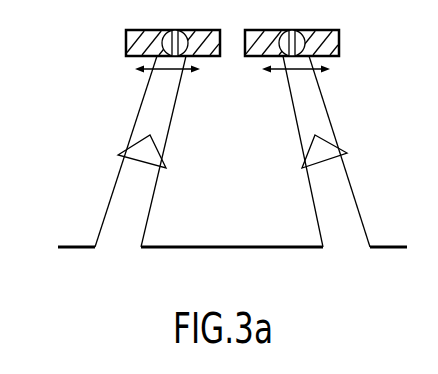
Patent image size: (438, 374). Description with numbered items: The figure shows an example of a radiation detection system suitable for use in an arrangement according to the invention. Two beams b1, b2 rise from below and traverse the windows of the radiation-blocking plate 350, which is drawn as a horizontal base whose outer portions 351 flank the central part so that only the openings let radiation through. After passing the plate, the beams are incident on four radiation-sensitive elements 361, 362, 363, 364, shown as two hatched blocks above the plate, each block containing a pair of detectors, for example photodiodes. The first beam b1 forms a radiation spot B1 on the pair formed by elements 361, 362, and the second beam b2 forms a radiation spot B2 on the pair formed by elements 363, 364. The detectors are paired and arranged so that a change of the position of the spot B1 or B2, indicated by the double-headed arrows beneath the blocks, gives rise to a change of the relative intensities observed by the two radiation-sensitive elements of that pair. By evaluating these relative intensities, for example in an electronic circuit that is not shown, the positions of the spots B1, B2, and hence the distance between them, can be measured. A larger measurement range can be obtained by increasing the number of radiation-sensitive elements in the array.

The radiation-blocking plate 350 is at (228, 249).
The base plate end portions 351 is at (118, 252).
The radiation-sensitive element 361 is at (131, 43).
The radiation-sensitive element 362 is at (215, 48).
The radiation-sensitive element 363 is at (258, 56).
The radiation-sensitive element 364 is at (330, 41).
The radiation spot B1 is at (182, 40).
The radiation spot B2 is at (300, 32).
The beam b1 is at (135, 197).
The beam b2 is at (327, 187).